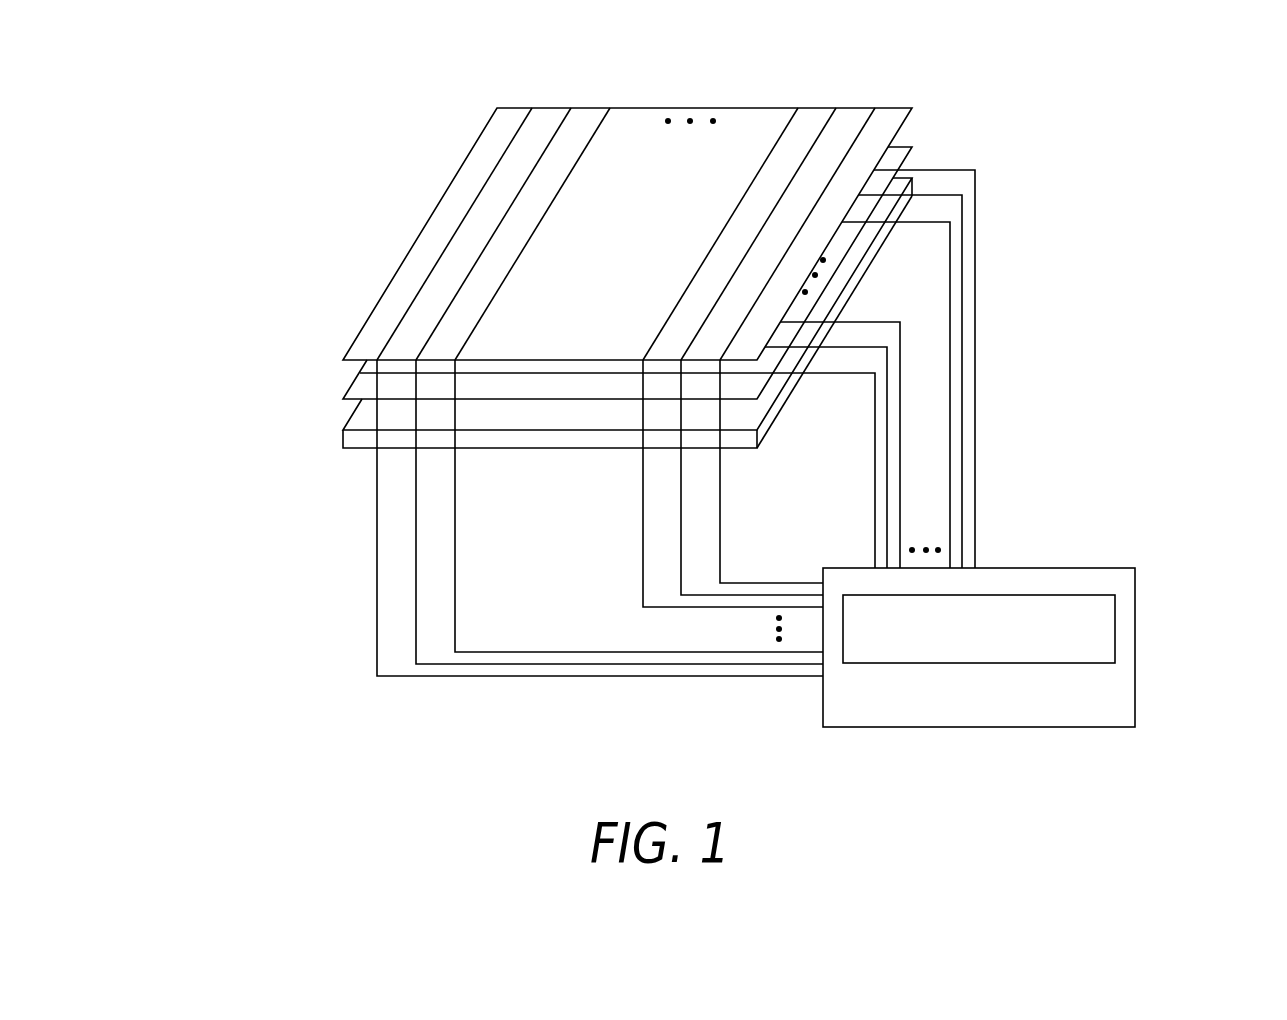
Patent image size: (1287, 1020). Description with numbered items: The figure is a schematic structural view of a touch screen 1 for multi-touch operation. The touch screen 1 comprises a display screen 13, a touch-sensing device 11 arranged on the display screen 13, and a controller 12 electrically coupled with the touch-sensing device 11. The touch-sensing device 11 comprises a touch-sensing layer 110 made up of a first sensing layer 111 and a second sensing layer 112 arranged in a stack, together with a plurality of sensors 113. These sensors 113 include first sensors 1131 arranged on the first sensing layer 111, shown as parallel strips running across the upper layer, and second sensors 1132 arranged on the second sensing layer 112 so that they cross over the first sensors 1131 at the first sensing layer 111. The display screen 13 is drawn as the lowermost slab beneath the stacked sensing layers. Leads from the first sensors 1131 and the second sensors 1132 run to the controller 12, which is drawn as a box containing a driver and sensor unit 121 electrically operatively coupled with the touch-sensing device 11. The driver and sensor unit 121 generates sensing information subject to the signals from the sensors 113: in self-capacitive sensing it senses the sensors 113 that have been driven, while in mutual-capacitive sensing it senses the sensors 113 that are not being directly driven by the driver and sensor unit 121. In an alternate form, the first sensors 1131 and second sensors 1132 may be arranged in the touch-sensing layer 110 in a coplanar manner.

The touch screen 1 is at (455, 123).
The touch-sensing device 11 is at (163, 333).
The touch-sensing layer 110 is at (240, 330).
The first sensing layer 111 is at (370, 345).
The second sensing layer 112 is at (367, 382).
The sensors 113 is at (1015, 98).
The first sensors 1131 is at (865, 126).
The second sensors 1132 is at (888, 170).
The display screen 13 is at (367, 417).
The controller 12 is at (1135, 693).
The driver and sensor unit 121 is at (1115, 628).